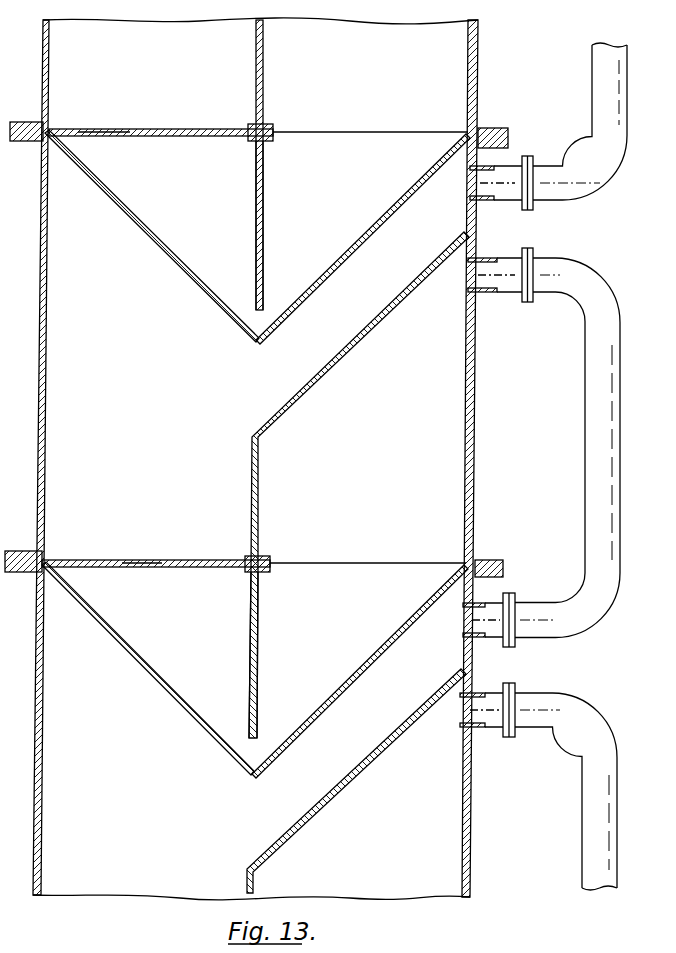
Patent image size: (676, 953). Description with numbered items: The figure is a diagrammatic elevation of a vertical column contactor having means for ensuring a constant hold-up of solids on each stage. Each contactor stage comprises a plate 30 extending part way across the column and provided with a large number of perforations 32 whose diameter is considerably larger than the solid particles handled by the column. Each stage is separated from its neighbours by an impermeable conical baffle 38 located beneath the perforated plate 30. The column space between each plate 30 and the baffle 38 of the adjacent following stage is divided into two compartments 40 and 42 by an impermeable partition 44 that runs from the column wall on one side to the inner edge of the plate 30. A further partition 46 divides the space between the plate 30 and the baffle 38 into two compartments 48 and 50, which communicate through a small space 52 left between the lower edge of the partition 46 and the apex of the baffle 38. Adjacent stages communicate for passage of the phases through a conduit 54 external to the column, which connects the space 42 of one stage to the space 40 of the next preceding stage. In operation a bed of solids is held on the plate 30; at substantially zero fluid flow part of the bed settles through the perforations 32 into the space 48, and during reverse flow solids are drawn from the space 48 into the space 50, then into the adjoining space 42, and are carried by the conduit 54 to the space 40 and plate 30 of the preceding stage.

The plate 30 is at (188, 128).
The perforations 32 is at (127, 134).
The conical baffle 38 is at (367, 236).
The compartment 40 is at (166, 60).
The compartment 42 is at (404, 85).
The partition 44 is at (264, 43).
The partition 46 is at (264, 166).
The compartment 48 is at (192, 195).
The compartment 50 is at (374, 178).
The small space 52 is at (255, 323).
The conduit 54 is at (592, 93).